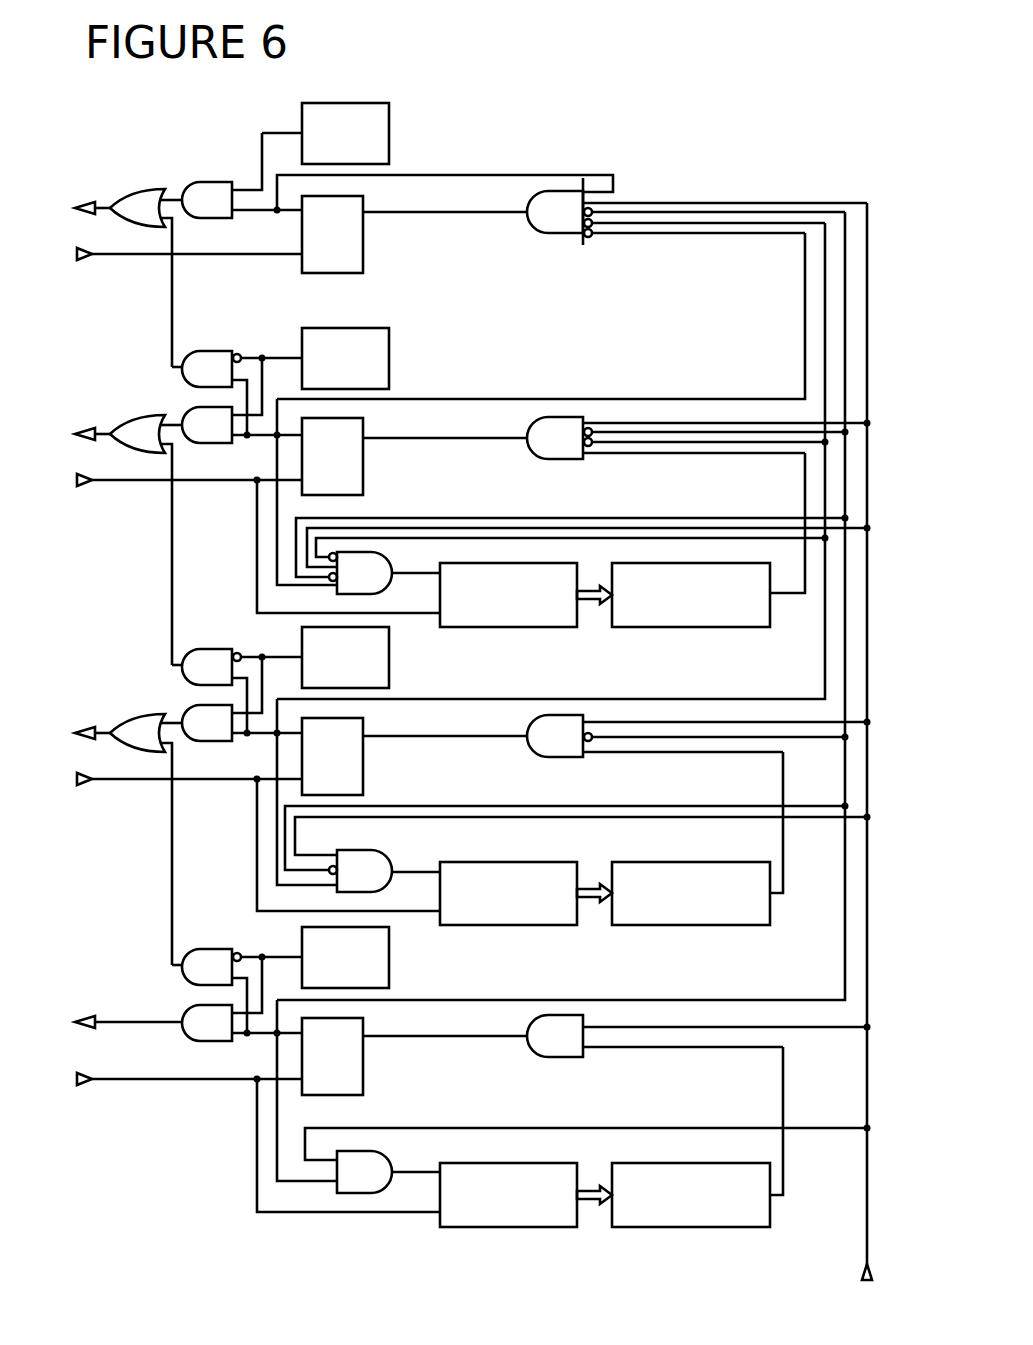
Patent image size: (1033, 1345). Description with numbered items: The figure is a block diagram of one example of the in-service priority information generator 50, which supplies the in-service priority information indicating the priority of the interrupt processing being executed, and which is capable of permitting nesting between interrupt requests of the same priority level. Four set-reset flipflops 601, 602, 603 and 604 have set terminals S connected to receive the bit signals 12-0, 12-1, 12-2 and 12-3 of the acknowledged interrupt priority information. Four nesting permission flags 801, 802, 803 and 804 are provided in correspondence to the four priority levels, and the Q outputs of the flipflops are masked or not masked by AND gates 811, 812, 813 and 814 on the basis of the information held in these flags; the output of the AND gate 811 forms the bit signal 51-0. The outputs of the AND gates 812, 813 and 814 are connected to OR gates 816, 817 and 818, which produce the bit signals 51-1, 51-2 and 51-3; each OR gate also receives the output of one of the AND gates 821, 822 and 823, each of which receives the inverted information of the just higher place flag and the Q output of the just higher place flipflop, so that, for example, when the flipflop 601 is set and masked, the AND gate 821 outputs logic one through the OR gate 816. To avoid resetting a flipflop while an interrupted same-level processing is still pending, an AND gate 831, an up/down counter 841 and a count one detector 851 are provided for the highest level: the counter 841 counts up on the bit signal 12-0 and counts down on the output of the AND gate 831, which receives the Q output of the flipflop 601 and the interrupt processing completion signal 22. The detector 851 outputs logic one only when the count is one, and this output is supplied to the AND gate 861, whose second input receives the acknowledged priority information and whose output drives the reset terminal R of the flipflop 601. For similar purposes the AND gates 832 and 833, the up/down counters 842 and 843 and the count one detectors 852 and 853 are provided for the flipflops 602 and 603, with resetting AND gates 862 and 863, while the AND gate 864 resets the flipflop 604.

The in-service priority information generator 50 is at (714, 133).
The interrupt processing completion signal 22 is at (866, 760).
The bit signal of in-service priority information 51-3 is at (63, 208).
The bit signal of in-service priority information 51-2 is at (63, 434).
The bit signal of in-service priority information 51-1 is at (63, 733).
The bit signal of in-service priority information 51-0 is at (99, 1031).
The bit signal of acknowledged priority information 12-3 is at (159, 254).
The bit signal of acknowledged priority information 12-2 is at (159, 480).
The bit signal of acknowledged priority information 12-1 is at (159, 779).
The bit signal of acknowledged priority information 12-0 is at (159, 1079).
The OR gate 818 is at (130, 190).
The OR gate 817 is at (130, 415).
The OR gate 816 is at (130, 714).
The AND gate 814 is at (208, 219).
The AND gate 813 is at (208, 444).
The AND gate 812 is at (208, 742).
The AND gate 811 is at (208, 1042).
The AND gate 823 is at (205, 351).
The AND gate 822 is at (205, 649).
The AND gate 821 is at (205, 949).
The nesting permission flag 804 is at (389, 133).
The nesting permission flag 803 is at (389, 358).
The nesting permission flag 802 is at (389, 672).
The nesting permission flag 801 is at (389, 972).
The set-reset flipflop 604 is at (363, 258).
The set-reset flipflop 603 is at (363, 484).
The set-reset flipflop 602 is at (363, 783).
The set-reset flipflop 601 is at (363, 1083).
The AND gate 864 is at (545, 233).
The AND gate 863 is at (545, 459).
The AND gate 862 is at (545, 757).
The AND gate 861 is at (545, 1057).
The AND gate 833 is at (383, 594).
The AND gate 832 is at (383, 892).
The AND gate 831 is at (383, 1193).
The up/down counter 843 is at (500, 627).
The up/down counter 842 is at (500, 925).
The up/down counter 841 is at (500, 1227).
The count "1" detector 853 is at (680, 627).
The count "1" detector 852 is at (680, 925).
The count "1" detector 851 is at (680, 1227).